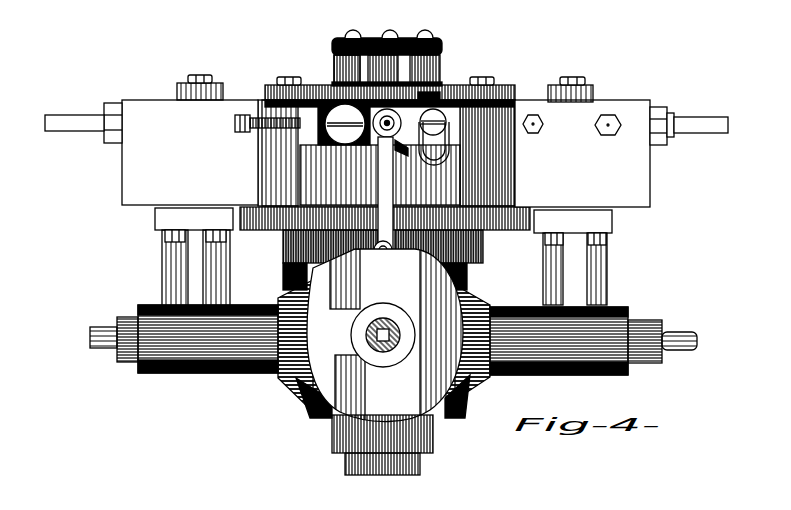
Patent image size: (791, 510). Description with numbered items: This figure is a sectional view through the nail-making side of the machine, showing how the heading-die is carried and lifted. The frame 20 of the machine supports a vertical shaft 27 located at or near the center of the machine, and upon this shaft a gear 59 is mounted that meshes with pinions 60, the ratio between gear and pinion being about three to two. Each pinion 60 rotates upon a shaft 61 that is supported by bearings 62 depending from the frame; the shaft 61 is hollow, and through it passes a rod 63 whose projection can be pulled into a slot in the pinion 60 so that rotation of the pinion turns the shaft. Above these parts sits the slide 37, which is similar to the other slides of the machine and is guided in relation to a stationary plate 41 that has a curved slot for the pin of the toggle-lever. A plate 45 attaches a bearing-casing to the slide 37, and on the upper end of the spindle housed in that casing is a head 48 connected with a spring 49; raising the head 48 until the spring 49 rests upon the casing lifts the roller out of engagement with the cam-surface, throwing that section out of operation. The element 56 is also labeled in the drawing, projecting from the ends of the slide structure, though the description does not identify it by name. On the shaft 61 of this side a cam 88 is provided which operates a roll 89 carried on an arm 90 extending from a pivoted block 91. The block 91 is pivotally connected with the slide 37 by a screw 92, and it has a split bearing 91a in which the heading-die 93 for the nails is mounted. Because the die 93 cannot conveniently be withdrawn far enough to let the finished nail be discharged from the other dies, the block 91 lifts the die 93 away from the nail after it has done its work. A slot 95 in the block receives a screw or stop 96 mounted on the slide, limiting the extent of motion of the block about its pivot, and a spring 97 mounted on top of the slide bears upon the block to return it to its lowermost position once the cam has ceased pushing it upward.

The frame 20 is at (218, 269).
The vertical shaft 27 is at (420, 466).
The slide 37 is at (447, 125).
The stationary plate 41 is at (213, 96).
The plate 45 is at (468, 92).
The head 48 is at (343, 40).
The spring 49 is at (400, 40).
The piston rod 56 is at (63, 125).
The gear 59 is at (448, 402).
The pinion 60 is at (292, 385).
The shaft 61 is at (128, 362).
The bearing 62 is at (208, 372).
The rod 63 is at (97, 348).
The cam 88 is at (440, 303).
The roll 89 is at (394, 247).
The arm 90 is at (378, 222).
The pivoted block 91 is at (362, 133).
The split bearing 91a is at (345, 85).
The screw 92 is at (340, 112).
The heading-die 93 is at (398, 150).
The slot 95 is at (451, 146).
The screw or stop 96 is at (438, 122).
The spring 97 is at (428, 92).